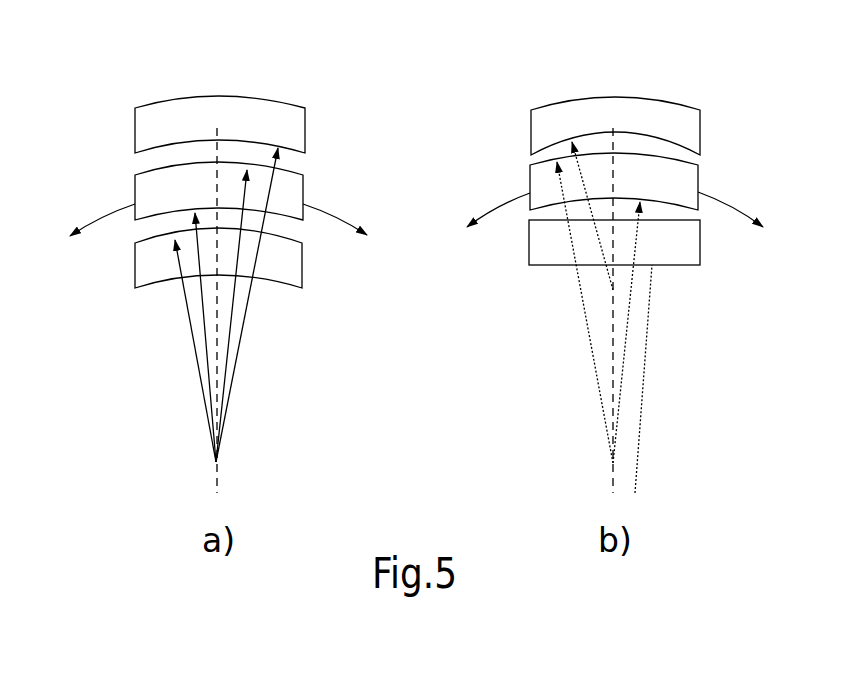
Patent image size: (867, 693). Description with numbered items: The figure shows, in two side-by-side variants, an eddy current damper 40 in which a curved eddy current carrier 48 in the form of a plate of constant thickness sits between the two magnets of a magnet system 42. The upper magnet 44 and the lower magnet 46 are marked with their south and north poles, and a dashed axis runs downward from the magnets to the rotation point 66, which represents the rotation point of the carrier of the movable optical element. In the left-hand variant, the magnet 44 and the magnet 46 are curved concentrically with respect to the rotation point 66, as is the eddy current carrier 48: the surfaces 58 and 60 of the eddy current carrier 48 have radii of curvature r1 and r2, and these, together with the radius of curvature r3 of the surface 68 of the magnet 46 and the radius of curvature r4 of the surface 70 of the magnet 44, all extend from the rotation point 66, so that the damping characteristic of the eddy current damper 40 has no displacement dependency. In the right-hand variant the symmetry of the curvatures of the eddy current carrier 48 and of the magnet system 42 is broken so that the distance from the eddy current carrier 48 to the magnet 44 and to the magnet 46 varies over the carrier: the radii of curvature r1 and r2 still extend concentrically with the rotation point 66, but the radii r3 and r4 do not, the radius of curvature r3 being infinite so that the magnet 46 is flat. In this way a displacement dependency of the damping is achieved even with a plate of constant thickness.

The eddy current damper 40 is at (188, 94).
The magnet system 42 is at (133, 106).
The magnet 44 is at (283, 116).
The magnet 46 is at (293, 263).
The eddy current carrier 48 is at (143, 193).
The surface 58 is at (150, 163).
The surface 60 is at (147, 226).
The rotation point 66 is at (209, 466).
The surface 68 is at (171, 227).
The surface 70 is at (290, 152).
The radius of curvature r1 is at (204, 340).
The radius of curvature r2 is at (234, 312).
The radius of curvature r3 is at (184, 312).
The radius of curvature r4 is at (244, 350).